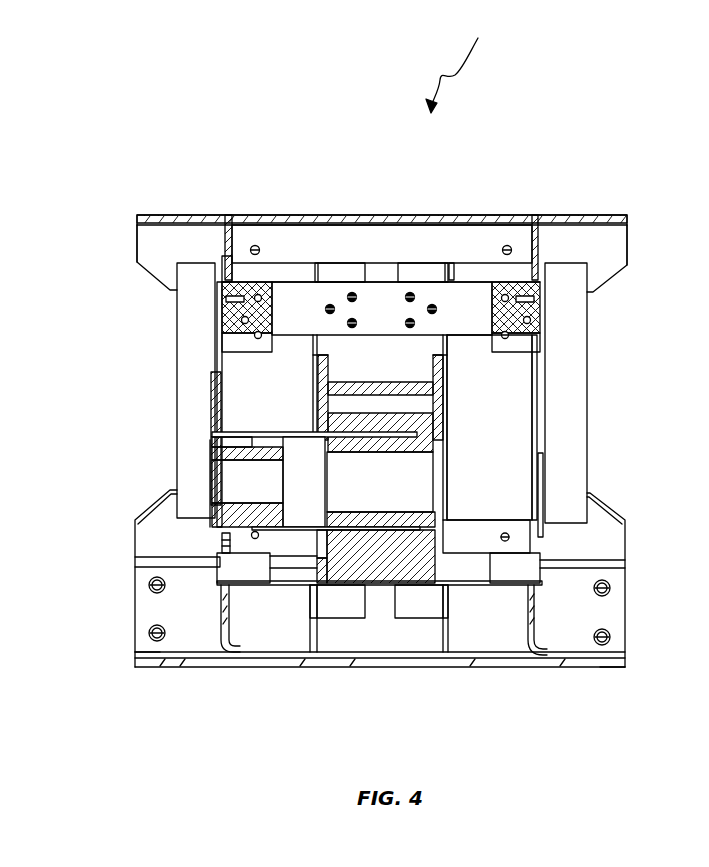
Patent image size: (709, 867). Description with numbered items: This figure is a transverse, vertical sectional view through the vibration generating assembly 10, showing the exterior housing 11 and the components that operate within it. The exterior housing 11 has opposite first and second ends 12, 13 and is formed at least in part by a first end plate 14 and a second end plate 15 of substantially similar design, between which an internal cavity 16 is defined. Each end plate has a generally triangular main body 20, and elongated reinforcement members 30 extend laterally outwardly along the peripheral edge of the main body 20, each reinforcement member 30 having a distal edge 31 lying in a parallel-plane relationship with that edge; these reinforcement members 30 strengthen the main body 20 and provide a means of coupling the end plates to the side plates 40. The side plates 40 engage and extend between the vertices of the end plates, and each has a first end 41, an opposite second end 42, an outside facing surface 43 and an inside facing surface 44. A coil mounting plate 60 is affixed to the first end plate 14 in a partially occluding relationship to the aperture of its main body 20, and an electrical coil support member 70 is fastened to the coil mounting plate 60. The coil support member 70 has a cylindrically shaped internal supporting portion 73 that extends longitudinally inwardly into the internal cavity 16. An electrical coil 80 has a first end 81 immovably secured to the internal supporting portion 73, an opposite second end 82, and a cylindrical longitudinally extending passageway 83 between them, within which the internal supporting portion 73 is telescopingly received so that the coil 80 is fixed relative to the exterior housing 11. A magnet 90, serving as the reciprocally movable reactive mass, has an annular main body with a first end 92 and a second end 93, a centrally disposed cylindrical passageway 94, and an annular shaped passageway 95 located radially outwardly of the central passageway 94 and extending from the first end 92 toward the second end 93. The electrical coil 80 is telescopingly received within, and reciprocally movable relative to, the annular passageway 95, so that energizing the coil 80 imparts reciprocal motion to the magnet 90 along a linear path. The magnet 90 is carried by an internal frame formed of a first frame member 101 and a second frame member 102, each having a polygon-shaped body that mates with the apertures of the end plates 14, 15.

The vibration generating assembly 10 is at (463, 61).
The exterior housing 11 is at (585, 218).
The first end 12 is at (135, 233).
The second end 13 is at (630, 255).
The first end plate 14 is at (228, 258).
The second end plate 15 is at (548, 523).
The internal cavity 16 is at (487, 418).
The main body 20 is at (213, 605).
The reinforcement member 30 is at (190, 378).
The distal edge 31 is at (178, 430).
The side plate 40 is at (467, 237).
The first end 41 is at (143, 233).
The second end 42 is at (610, 237).
The outside facing surface 43 is at (322, 215).
The inside facing surface 44 is at (263, 233).
The coil mounting plate 60 is at (217, 352).
The electrical coil support member 70 is at (240, 522).
The internal supporting portion 73 is at (255, 540).
The electrical coil 80 is at (302, 432).
The first end 81 is at (275, 530).
The second end 82 is at (348, 555).
The passageway 83 is at (307, 515).
The magnet 90 is at (378, 545).
The first end 92 is at (335, 420).
The second end 93 is at (433, 518).
The centrally disposed passageway 94 is at (405, 470).
The annular shaped passageway 95 is at (390, 430).
The first frame member 101 is at (320, 372).
The second frame member 102 is at (443, 372).